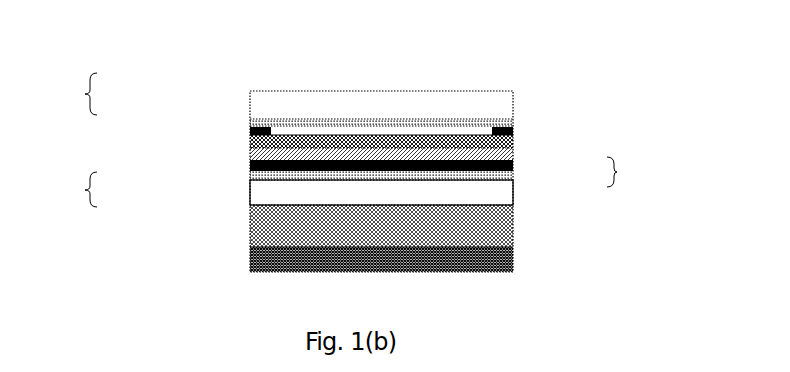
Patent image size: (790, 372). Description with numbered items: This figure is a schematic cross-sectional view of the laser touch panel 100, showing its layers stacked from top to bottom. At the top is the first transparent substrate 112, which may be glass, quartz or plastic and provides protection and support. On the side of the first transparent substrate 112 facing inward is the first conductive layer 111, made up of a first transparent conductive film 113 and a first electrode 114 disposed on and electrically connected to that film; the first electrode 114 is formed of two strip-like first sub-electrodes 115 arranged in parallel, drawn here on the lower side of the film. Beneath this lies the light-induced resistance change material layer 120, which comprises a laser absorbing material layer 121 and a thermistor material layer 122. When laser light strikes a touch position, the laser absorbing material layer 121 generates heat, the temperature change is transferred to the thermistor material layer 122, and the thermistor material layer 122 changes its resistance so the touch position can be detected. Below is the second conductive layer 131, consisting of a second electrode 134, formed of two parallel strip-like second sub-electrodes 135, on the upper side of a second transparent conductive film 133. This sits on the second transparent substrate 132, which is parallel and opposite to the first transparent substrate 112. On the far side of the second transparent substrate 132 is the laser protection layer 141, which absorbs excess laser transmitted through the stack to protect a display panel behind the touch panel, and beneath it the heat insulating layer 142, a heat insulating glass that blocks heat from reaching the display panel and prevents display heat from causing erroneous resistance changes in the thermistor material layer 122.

The laser touch panel 100 is at (352, 165).
The first conductive layer 111 is at (280, 101).
The first transparent substrate 112 is at (549, 120).
The first transparent conductive film 113 is at (331, 96).
The first electrode 114 is at (189, 120).
The first sub-electrode 115 is at (189, 120).
The light-induced resistance change material layer 120 is at (454, 164).
The laser absorbing material layer 121 is at (427, 152).
The thermistor material layer 122 is at (427, 171).
The second conductive layer 131 is at (280, 187).
The second transparent substrate 132 is at (331, 211).
The second transparent conductive film 133 is at (331, 193).
The second electrode 134 is at (310, 171).
The second sub-electrode 135 is at (310, 171).
The laser protection layer 141 is at (331, 236).
The heat insulating layer 142 is at (331, 272).